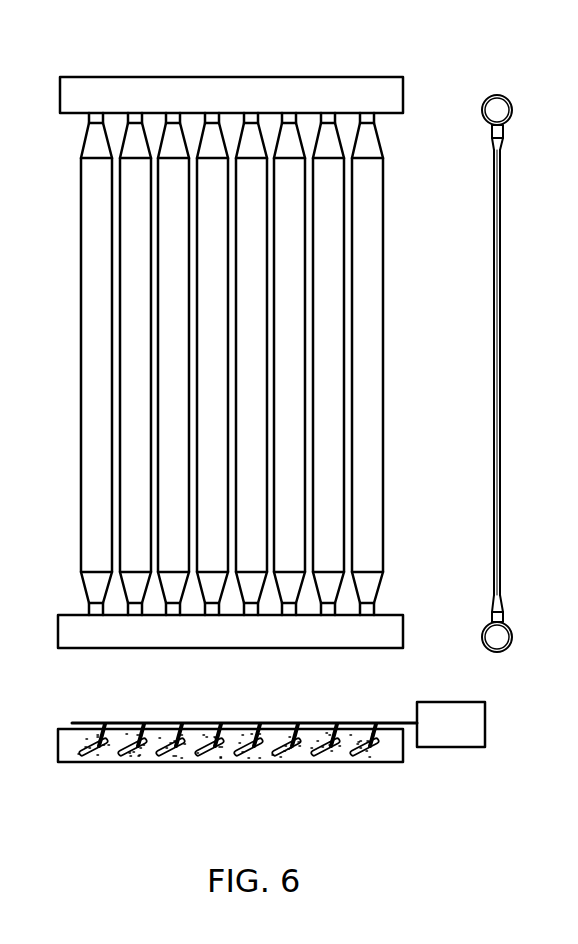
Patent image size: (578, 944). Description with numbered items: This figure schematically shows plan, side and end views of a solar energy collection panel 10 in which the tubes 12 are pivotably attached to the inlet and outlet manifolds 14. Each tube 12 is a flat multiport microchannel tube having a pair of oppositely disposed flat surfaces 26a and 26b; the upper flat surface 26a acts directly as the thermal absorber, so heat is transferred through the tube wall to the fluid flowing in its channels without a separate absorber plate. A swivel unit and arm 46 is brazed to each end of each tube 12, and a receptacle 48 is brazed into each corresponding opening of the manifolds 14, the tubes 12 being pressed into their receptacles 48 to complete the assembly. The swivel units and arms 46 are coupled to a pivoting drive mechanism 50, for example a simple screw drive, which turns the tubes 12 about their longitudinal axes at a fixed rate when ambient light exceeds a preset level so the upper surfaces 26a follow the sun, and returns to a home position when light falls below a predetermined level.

The solar energy collection panel 10 is at (124, 48).
The tube 12 is at (336, 362).
The manifold 14 is at (272, 90).
The upper flat surface 26a is at (132, 448).
The lower flat surface 26b is at (497, 293).
The swivel unit and arm 46 is at (355, 723).
The receptacle 48 is at (367, 118).
The pivoting drive mechanism 50 is at (460, 735).